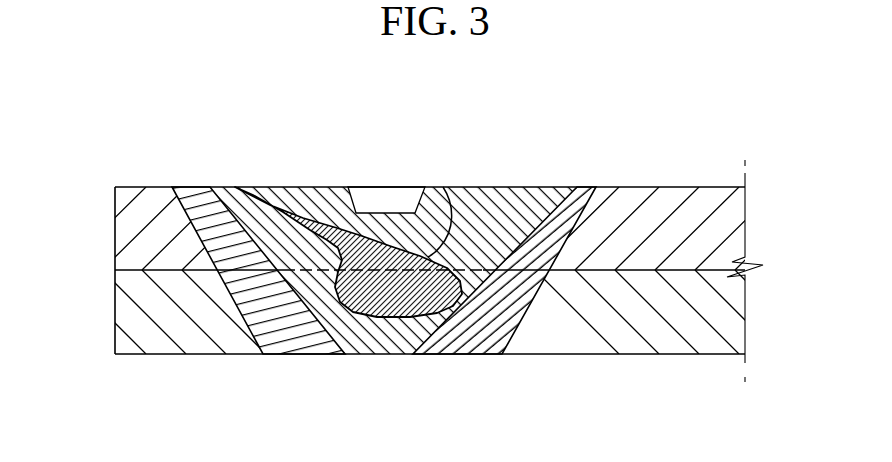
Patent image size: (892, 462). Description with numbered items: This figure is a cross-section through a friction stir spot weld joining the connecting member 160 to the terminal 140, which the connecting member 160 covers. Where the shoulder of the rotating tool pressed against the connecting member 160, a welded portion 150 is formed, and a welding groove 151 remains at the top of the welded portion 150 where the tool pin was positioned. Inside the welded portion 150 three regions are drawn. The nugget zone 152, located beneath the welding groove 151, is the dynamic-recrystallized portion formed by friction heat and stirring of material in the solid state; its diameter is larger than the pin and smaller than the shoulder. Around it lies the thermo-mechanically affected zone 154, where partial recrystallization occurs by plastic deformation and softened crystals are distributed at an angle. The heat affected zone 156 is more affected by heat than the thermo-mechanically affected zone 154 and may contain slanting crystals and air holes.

The terminal 140 is at (665, 345).
The welded portion 150 is at (536, 187).
The welding groove 151 is at (376, 212).
The nugget zone 152 is at (443, 187).
The thermo-mechanically affected zone 154 is at (497, 208).
The heat affected zone 156 is at (201, 214).
The connecting member 160 is at (665, 200).